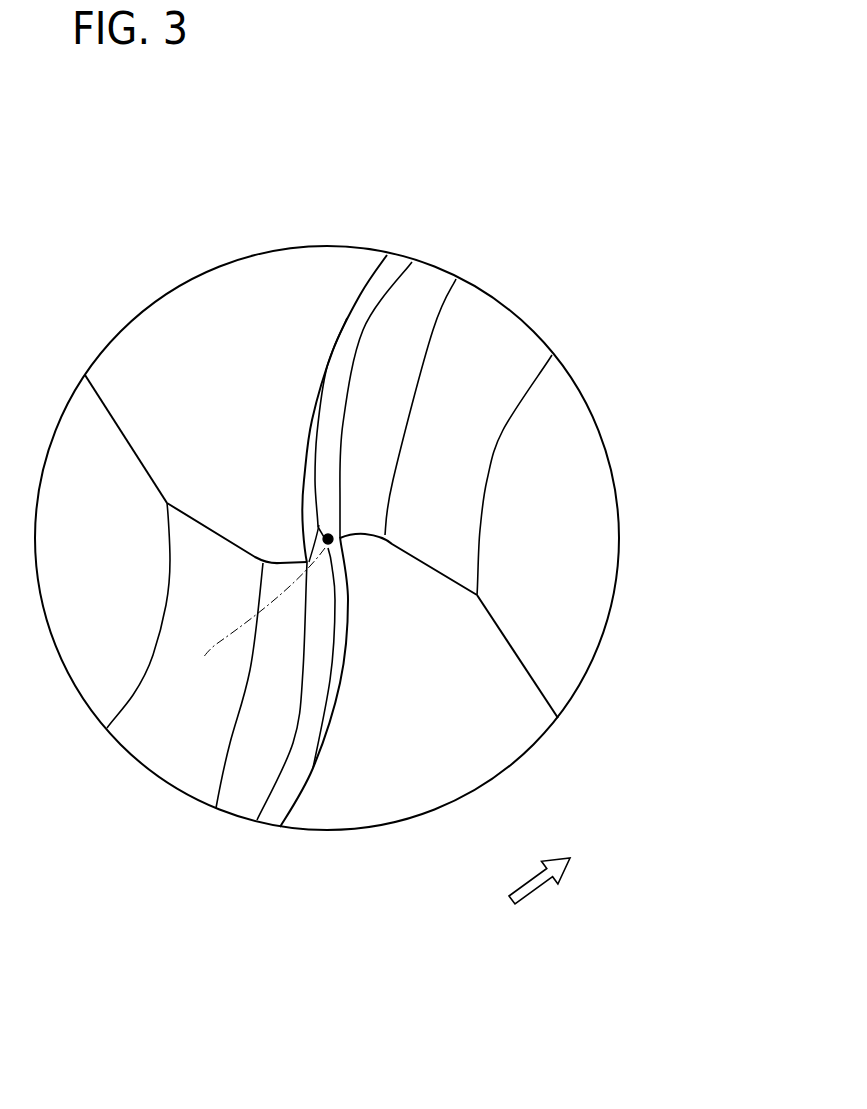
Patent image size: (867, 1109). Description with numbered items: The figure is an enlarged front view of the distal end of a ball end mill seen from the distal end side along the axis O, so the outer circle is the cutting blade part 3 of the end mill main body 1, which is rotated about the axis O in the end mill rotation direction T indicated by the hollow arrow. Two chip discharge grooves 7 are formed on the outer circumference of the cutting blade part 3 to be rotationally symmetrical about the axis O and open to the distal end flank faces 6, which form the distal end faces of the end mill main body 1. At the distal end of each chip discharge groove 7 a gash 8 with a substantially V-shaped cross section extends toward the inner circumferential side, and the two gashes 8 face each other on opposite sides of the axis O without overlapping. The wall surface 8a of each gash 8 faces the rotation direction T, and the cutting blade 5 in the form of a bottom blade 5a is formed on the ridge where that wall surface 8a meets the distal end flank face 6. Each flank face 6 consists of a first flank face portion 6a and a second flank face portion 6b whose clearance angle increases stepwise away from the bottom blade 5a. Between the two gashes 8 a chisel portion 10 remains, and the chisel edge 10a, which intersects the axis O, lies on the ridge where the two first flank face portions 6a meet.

The end mill main body 1 is at (346, 441).
The cutting blade part 3 is at (327, 538).
The cutting blade 5 is at (339, 539).
The bottom blade 5a is at (328, 370).
The distal end flank face 6 is at (321, 518).
The first flank face portion 6a is at (395, 267).
The second flank face portion 6b is at (427, 280).
The chip discharge groove 7 is at (182, 323).
The gash 8 is at (322, 543).
The wall surface of the gash 8a is at (303, 477).
The chisel portion 10 is at (330, 516).
The chisel edge 10a is at (322, 535).
The axis O is at (259, 618).
The end mill rotation direction T is at (539, 896).